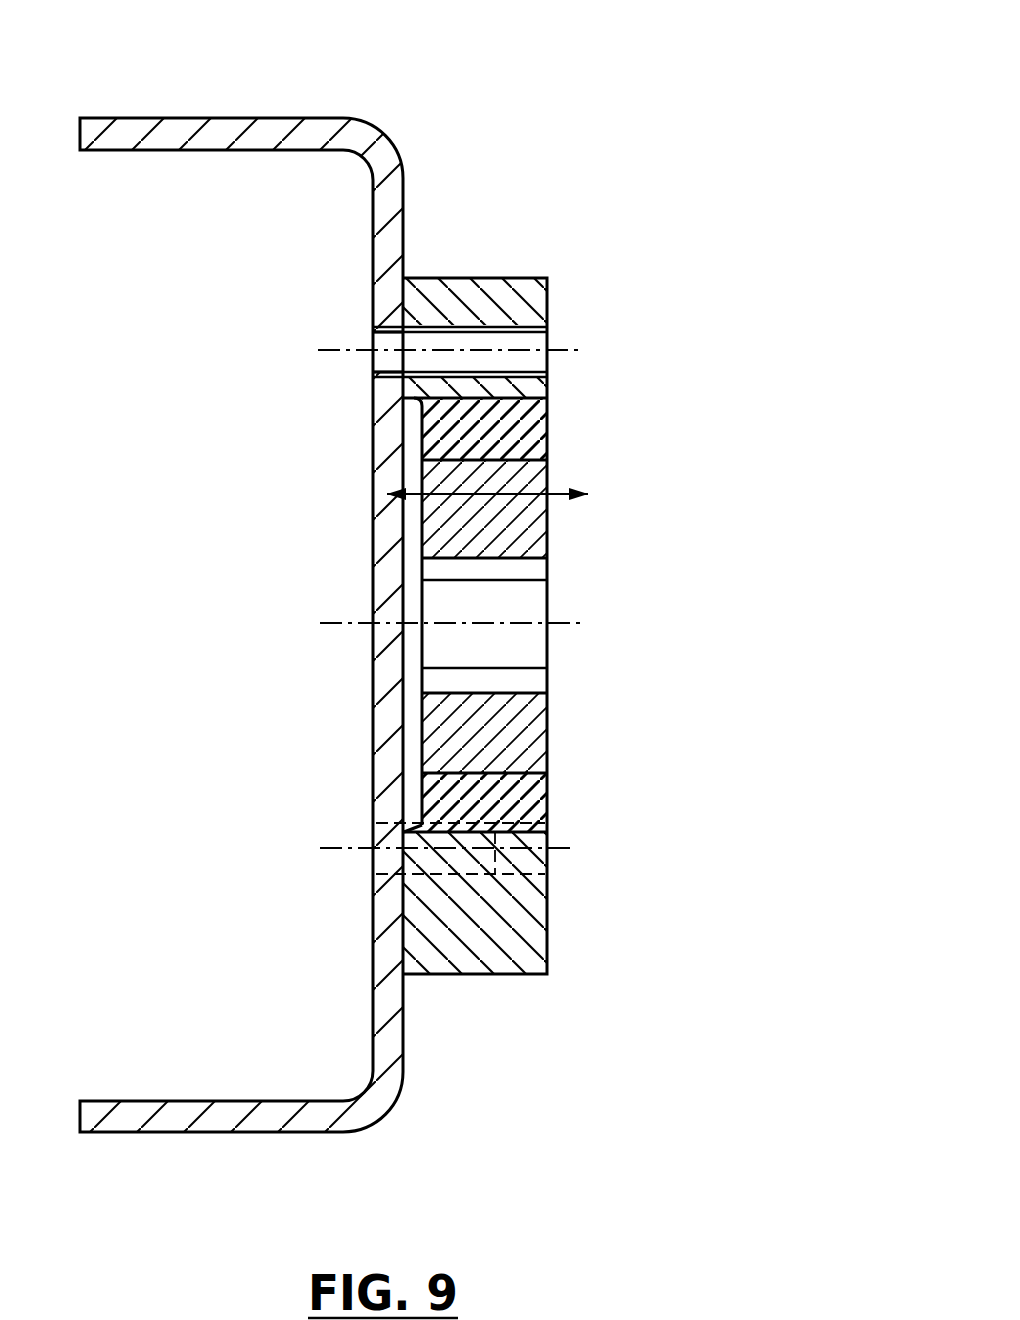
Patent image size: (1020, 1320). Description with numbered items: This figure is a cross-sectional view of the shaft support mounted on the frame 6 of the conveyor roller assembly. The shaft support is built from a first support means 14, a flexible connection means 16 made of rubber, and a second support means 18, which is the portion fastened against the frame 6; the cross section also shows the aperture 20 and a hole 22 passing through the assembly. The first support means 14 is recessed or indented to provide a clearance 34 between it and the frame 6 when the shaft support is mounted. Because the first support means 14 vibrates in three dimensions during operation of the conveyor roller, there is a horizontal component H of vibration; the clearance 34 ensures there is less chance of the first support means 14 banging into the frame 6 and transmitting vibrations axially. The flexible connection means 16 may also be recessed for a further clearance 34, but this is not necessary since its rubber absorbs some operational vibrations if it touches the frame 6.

The frame 6 is at (213, 118).
The first support means 14 is at (547, 529).
The flexible connection means 16 is at (547, 428).
The second support means 18 is at (547, 297).
The aperture 20 is at (547, 610).
The hole 22 is at (547, 366).
The clearance 34 is at (412, 532).
The horizontal component of vibration H is at (552, 491).